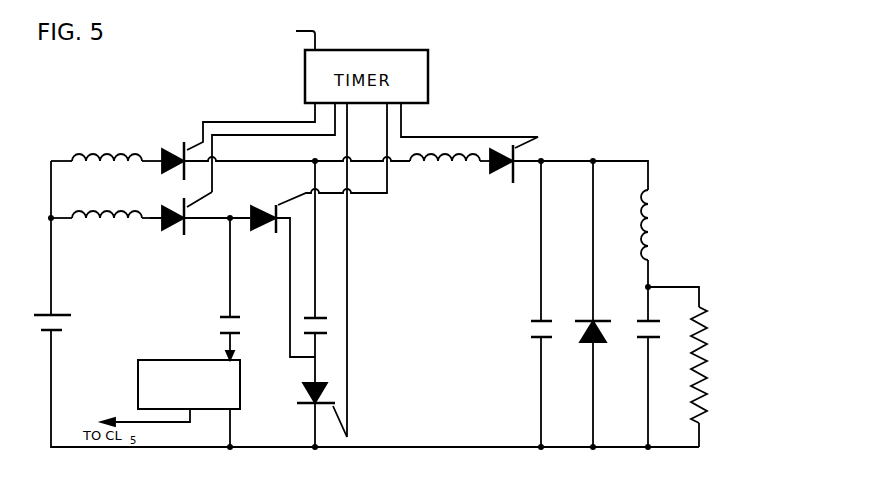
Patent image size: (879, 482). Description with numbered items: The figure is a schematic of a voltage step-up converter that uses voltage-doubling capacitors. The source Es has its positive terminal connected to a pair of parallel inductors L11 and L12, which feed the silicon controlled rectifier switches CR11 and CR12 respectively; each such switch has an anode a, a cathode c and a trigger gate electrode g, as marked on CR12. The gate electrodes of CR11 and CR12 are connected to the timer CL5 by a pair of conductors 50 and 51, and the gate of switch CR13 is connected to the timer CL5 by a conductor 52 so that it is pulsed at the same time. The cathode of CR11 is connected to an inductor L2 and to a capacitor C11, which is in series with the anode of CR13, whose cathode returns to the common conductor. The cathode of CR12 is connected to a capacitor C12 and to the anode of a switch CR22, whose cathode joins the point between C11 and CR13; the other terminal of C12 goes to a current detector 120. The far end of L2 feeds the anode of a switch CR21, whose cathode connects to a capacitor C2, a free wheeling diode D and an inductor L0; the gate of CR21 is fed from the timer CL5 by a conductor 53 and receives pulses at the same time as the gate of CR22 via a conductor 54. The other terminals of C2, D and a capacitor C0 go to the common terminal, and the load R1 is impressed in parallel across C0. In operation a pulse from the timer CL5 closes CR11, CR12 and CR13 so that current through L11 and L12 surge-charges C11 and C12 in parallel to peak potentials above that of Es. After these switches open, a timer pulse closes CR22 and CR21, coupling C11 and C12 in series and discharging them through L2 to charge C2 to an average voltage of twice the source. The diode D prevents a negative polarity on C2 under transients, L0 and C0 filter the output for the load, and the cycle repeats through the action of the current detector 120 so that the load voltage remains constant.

The timer CL5 is at (286, 40).
The conductor 50 is at (259, 120).
The conductor 51 is at (296, 133).
The conductor 52 is at (350, 257).
The conductor 53 is at (452, 137).
The conductor 54 is at (368, 193).
The trigger gate electrode g is at (203, 198).
The anode a is at (167, 206).
The cathode c is at (188, 234).
The inductor L11 is at (115, 152).
The inductor L12 is at (118, 224).
The inductor L2 is at (437, 166).
The inductor L0 is at (652, 249).
The switch CR11 is at (168, 146).
The switch CR12 is at (172, 230).
The switch CR13 is at (303, 393).
The switch CR21 is at (511, 184).
The switch CR22 is at (277, 200).
The capacitor C11 is at (328, 326).
The capacitor C12 is at (220, 327).
The capacitor C2 is at (531, 328).
The capacitor C0 is at (640, 326).
The free wheeling diode D is at (583, 338).
The load R1 is at (707, 360).
The source Es is at (40, 330).
The current detector 120 is at (140, 368).